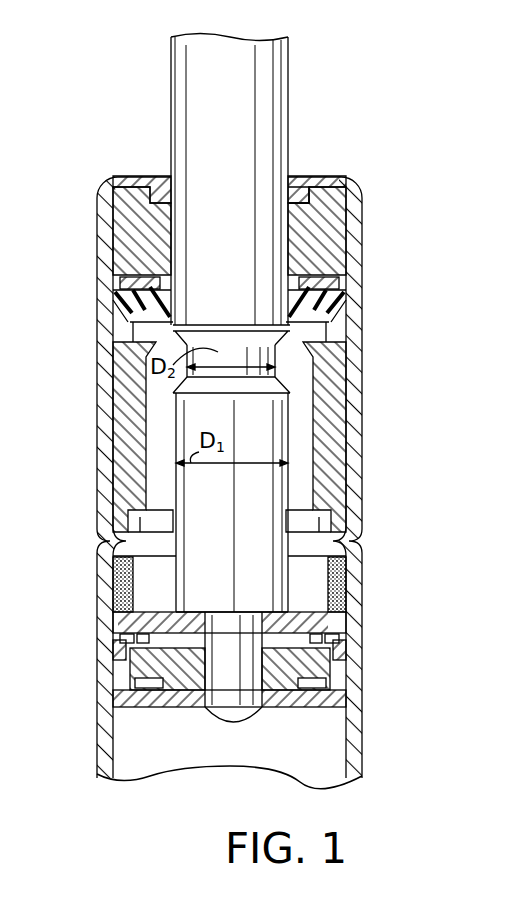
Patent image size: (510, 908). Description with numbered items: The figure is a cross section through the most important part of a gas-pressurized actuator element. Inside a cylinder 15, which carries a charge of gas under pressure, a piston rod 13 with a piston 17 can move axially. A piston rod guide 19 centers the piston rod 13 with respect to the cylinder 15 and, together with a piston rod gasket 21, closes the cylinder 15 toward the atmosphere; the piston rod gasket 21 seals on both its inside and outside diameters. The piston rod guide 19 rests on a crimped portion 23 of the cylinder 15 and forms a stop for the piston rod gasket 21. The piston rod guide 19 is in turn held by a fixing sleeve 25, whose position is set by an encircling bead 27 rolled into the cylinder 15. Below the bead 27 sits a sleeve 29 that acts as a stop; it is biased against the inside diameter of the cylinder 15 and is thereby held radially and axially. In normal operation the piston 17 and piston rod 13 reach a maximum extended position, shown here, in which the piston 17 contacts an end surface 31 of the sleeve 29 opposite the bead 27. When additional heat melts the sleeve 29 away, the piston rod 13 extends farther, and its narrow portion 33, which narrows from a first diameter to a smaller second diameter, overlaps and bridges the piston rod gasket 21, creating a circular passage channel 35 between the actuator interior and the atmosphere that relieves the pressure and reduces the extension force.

The piston rod 13 is at (205, 117).
The cylinder 15 is at (122, 574).
The piston 17 is at (122, 695).
The piston rod guide 19 is at (135, 212).
The piston rod gasket 21 is at (335, 307).
The crimped portion 23 is at (345, 186).
The fixing sleeve 25 is at (325, 476).
The encircling bead 27 is at (104, 543).
The sleeve 29 is at (342, 580).
The end surface 31 is at (124, 622).
The narrow portion 33 is at (282, 358).
The circular passage channel 35 is at (298, 186).